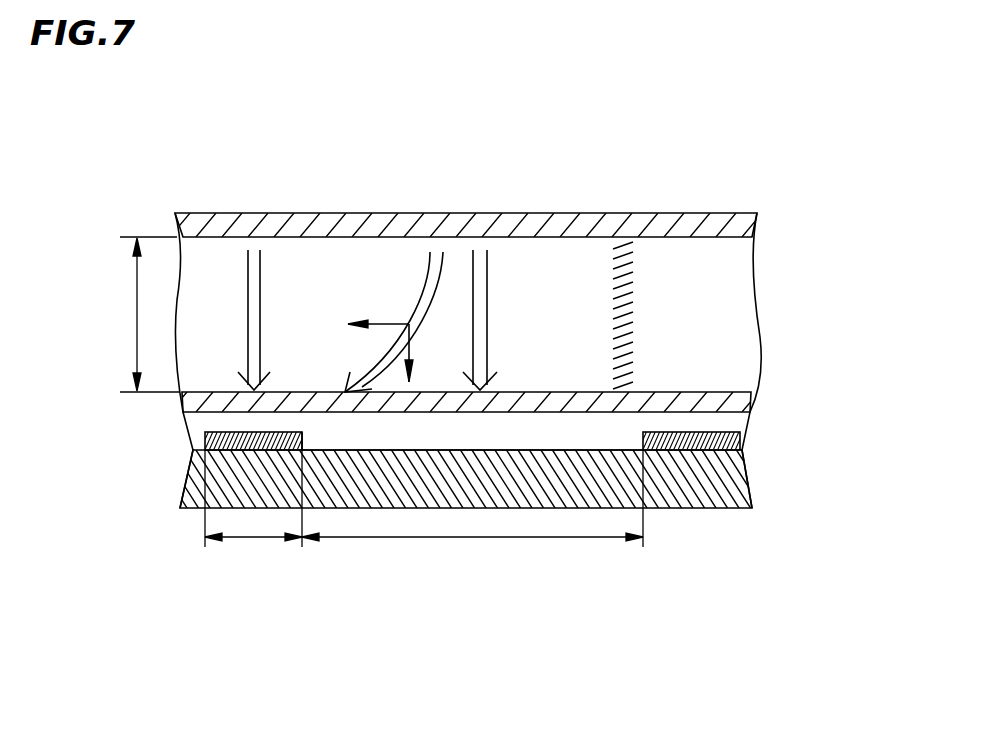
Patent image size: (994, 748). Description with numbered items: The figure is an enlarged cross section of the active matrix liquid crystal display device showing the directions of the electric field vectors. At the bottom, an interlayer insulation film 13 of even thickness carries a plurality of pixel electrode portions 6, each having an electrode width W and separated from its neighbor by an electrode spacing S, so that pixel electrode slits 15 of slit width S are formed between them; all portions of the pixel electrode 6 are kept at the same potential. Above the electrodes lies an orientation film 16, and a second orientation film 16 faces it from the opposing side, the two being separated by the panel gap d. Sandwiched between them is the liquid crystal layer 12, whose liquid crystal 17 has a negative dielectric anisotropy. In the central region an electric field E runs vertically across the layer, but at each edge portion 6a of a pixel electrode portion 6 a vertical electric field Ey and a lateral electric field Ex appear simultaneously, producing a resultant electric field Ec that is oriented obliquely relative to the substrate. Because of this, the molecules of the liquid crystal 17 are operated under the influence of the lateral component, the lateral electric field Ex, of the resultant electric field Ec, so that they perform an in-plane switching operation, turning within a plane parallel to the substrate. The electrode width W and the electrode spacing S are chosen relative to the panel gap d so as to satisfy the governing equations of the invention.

The orientation film 16 is at (697, 217).
The liquid crystal layer 12 is at (580, 252).
The liquid crystal 17 is at (627, 298).
The interlayer insulation film 13 is at (697, 485).
The pixel electrode 6 is at (202, 440).
The edge portion 6a is at (300, 432).
The pixel electrode slit 15 is at (567, 450).
The electrode width W is at (258, 538).
The electrode spacing S is at (527, 537).
The panel gap d is at (137, 313).
The electric field E is at (248, 280).
The lateral electric field Ex is at (385, 324).
The vertical electric field Ey is at (412, 352).
The resultant electric field Ec is at (428, 273).